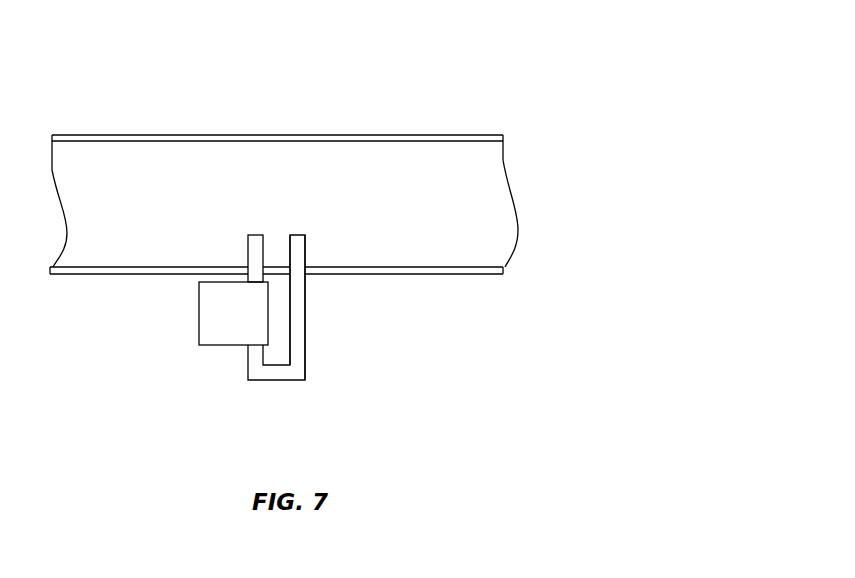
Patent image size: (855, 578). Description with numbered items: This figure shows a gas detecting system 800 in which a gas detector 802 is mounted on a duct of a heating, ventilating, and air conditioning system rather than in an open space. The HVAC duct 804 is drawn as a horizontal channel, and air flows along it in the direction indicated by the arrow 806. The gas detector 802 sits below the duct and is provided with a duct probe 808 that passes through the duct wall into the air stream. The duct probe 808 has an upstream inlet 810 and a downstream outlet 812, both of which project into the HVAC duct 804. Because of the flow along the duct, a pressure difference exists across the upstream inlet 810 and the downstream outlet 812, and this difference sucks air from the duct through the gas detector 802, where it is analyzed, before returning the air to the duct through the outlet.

The gas detecting system 800 is at (280, 219).
The gas detector 802 is at (200, 315).
The HVAC duct 804 is at (279, 134).
The arrow 806 is at (148, 216).
The duct probe 808 is at (305, 335).
The upstream inlet 810 is at (252, 235).
The downstream outlet 812 is at (300, 235).